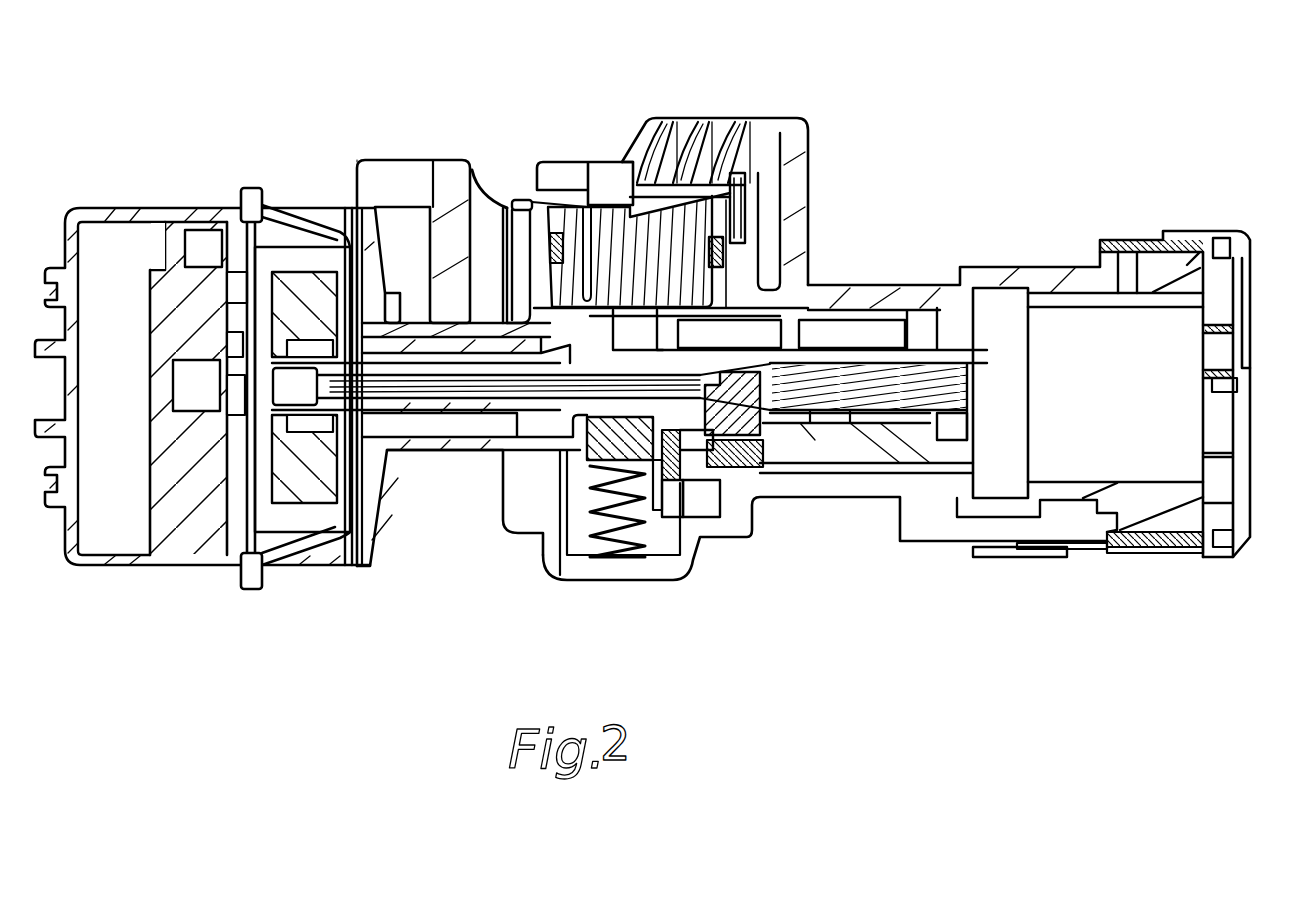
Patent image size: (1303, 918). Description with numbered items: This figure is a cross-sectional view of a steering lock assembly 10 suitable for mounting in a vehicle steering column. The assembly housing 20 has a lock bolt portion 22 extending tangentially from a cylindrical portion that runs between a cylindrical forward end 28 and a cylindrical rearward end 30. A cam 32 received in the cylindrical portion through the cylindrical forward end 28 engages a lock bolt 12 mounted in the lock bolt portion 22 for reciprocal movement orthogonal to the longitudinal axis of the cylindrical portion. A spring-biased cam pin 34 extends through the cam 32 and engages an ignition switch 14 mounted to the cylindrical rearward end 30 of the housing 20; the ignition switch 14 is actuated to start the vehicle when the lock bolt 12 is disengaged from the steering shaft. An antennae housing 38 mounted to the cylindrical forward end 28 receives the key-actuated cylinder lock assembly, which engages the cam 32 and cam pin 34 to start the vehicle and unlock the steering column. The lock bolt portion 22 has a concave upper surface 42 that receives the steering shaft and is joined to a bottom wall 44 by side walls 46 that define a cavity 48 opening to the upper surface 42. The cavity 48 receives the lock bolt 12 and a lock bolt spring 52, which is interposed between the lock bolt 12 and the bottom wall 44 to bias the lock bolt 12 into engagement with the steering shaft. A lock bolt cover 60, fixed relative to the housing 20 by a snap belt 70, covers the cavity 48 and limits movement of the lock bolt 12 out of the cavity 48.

The steering lock assembly 10 is at (1000, 100).
The lock bolt 12 is at (560, 160).
The ignition switch 14 is at (199, 209).
The assembly housing 20 is at (712, 72).
The lock bolt portion 22 is at (797, 120).
The cylindrical forward end 28 is at (1154, 176).
The cylindrical rearward end 30 is at (280, 138).
The cam 32 is at (840, 440).
The cam pin 34 is at (905, 400).
The antennae housing 38 is at (1220, 231).
The concave upper surface 42 is at (525, 200).
The bottom wall 44 is at (627, 567).
The side walls 46 is at (505, 205).
The cavity 48 is at (740, 307).
The lock bolt spring 52 is at (647, 520).
The lock bolt cover 60 is at (730, 290).
The snap belt 70 is at (730, 262).